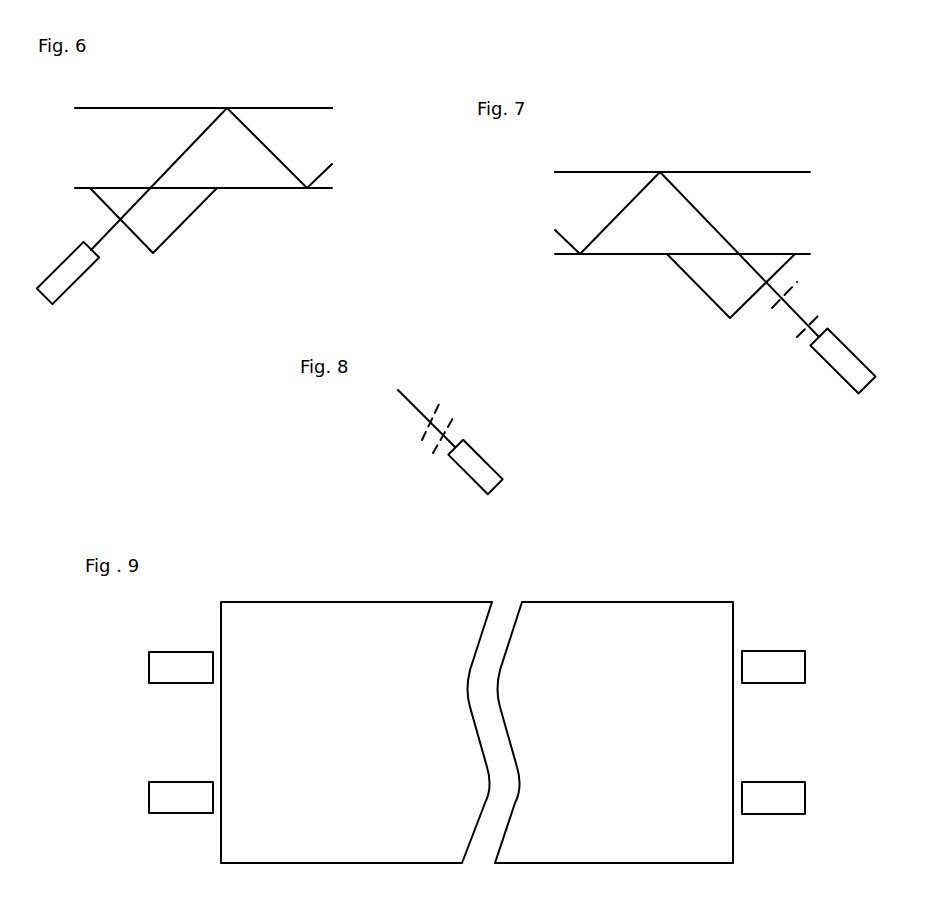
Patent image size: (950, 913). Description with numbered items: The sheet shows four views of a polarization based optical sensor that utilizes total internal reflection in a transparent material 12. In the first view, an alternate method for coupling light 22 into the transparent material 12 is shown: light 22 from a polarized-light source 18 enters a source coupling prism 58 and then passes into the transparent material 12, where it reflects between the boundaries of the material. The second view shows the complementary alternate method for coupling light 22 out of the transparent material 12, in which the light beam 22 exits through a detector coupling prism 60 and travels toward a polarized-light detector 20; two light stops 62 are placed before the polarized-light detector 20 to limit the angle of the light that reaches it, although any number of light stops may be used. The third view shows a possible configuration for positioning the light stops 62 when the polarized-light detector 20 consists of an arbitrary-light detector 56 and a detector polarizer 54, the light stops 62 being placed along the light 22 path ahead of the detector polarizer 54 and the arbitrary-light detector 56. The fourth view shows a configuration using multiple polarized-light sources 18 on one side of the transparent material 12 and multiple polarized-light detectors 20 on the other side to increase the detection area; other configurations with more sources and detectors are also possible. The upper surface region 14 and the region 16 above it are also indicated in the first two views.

In FIG. 6, the transparent material 12 is at (162, 123).
In FIG. 7, the transparent material 12 is at (723, 187).
In FIG. 9, the transparent material 12 is at (622, 658).
In FIG. 6, the upper surface of sheet 14 is at (317, 103).
In FIG. 7, the upper surface of sheet 14 is at (567, 168).
In FIG. 6, the medium above sheet 16 is at (272, 68).
In FIG. 7, the medium above sheet 16 is at (605, 142).
In FIG. 6, the polarized-light source 18 is at (70, 262).
In FIG. 9, the polarized-light source 18 is at (151, 732).
In FIG. 7, the polarized-light detector 20 is at (848, 340).
In FIG. 9, the polarized-light detector 20 is at (797, 732).
In FIG. 6, the light 22 is at (247, 135).
In FIG. 7, the light 22 is at (640, 197).
In FIG. 8, the light 22 is at (400, 398).
In FIG. 8, the detector polarizer 54 is at (447, 410).
In FIG. 8, the arbitrary-light detector 56 is at (478, 473).
In FIG. 6, the source coupling prism 58 is at (178, 222).
In FIG. 7, the detector coupling prism 60 is at (707, 287).
In FIG. 7, the light stops 62 is at (819, 290).
In FIG. 8, the light stops 62 is at (395, 438).